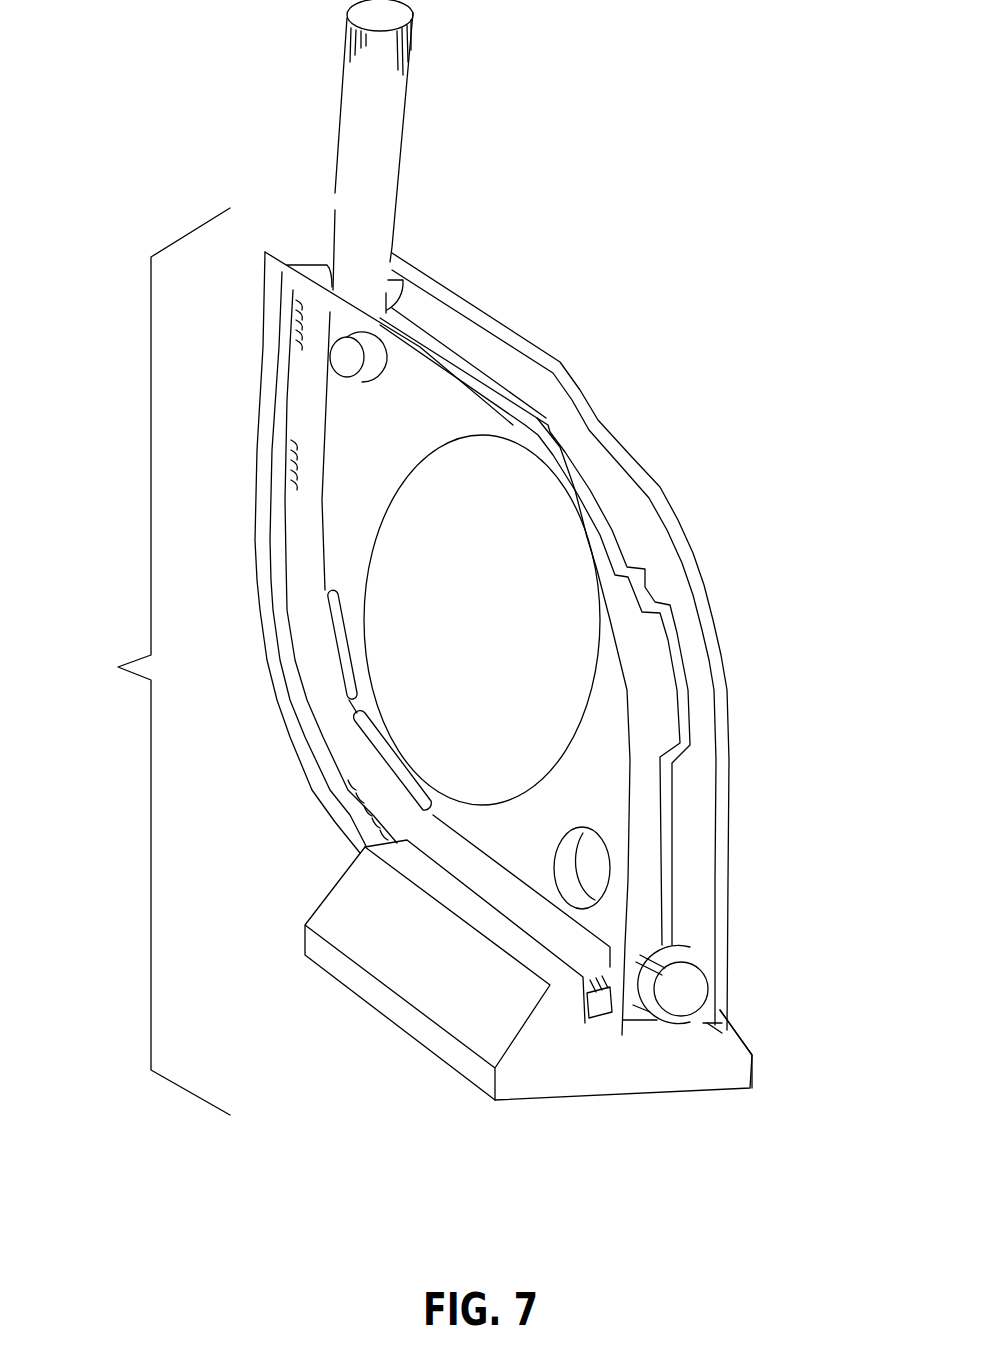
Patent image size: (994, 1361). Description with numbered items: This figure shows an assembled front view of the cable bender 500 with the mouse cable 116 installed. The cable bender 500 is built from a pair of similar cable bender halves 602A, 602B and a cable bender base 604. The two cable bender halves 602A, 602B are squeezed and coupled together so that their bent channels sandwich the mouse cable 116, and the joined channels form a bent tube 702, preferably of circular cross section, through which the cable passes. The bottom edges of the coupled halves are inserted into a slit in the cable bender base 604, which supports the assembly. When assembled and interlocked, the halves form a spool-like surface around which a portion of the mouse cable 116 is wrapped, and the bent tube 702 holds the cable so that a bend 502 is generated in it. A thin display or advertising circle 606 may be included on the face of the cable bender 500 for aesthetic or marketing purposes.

The mouse cable 116 is at (383, 102).
The cable bender 500 is at (390, 661).
The bend 502 is at (337, 738).
The display or advertising circle 606 is at (497, 468).
The bent tube 702 is at (685, 957).
The cable bender base 604 is at (737, 1063).
The cable bender half 602A is at (712, 1030).
The cable bender half 602B is at (610, 1043).